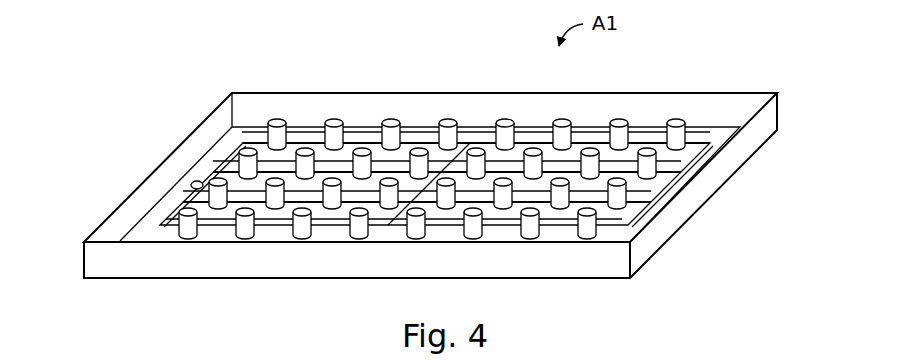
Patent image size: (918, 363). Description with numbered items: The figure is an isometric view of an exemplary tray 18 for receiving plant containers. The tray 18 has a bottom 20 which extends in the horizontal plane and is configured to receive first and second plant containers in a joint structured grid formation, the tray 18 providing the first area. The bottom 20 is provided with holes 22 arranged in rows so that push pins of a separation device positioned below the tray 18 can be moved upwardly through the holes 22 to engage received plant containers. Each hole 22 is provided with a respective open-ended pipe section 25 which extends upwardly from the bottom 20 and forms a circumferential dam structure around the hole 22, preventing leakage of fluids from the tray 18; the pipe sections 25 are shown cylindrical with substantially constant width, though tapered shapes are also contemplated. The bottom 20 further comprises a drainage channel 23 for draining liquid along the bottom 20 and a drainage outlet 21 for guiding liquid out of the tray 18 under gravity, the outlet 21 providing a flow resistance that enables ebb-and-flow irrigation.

The tray 18 is at (109, 116).
The bottom 20 is at (707, 137).
The drainage outlet 21 is at (191, 185).
The hole 22 is at (277, 117).
The drainage channel 23 is at (160, 225).
The pipe section 25 is at (270, 142).